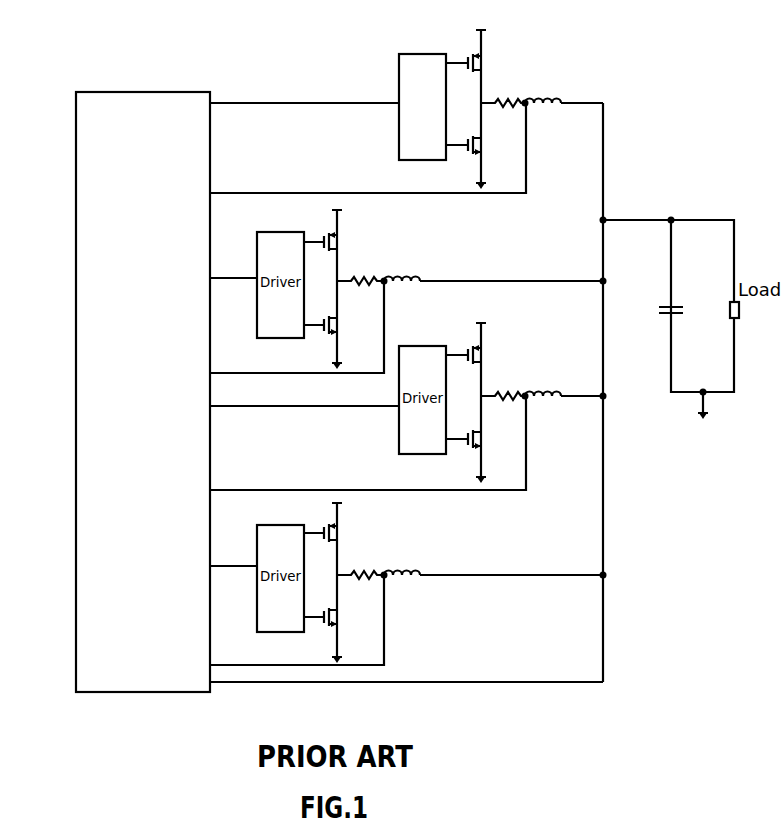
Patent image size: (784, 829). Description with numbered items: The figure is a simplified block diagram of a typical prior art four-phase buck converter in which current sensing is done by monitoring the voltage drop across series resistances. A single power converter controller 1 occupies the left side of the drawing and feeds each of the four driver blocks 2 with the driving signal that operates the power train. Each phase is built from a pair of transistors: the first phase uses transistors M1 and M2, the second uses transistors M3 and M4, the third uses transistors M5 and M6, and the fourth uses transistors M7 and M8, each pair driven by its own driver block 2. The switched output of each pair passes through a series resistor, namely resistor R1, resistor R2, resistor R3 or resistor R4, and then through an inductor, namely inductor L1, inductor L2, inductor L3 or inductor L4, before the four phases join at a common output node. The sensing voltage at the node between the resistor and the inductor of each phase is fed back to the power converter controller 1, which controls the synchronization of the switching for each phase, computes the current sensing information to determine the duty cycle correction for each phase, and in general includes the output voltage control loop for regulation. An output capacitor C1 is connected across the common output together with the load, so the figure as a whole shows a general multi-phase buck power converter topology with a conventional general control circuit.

The power converter controller 1 is at (132, 92).
The driver block 2 is at (399, 73).
The transistor M1 is at (491, 63).
The transistor M2 is at (491, 146).
The transistor M3 is at (347, 241).
The transistor M4 is at (347, 326).
The transistor M5 is at (491, 355).
The transistor M6 is at (491, 440).
The transistor M7 is at (347, 533).
The transistor M8 is at (347, 618).
The resistor R1 is at (503, 91).
The resistor R2 is at (360, 269).
The resistor R3 is at (503, 384).
The resistor R4 is at (360, 562).
The inductor L1 is at (543, 89).
The inductor L2 is at (402, 267).
The inductor L3 is at (543, 382).
The inductor L4 is at (402, 560).
The capacitor C1 is at (681, 298).